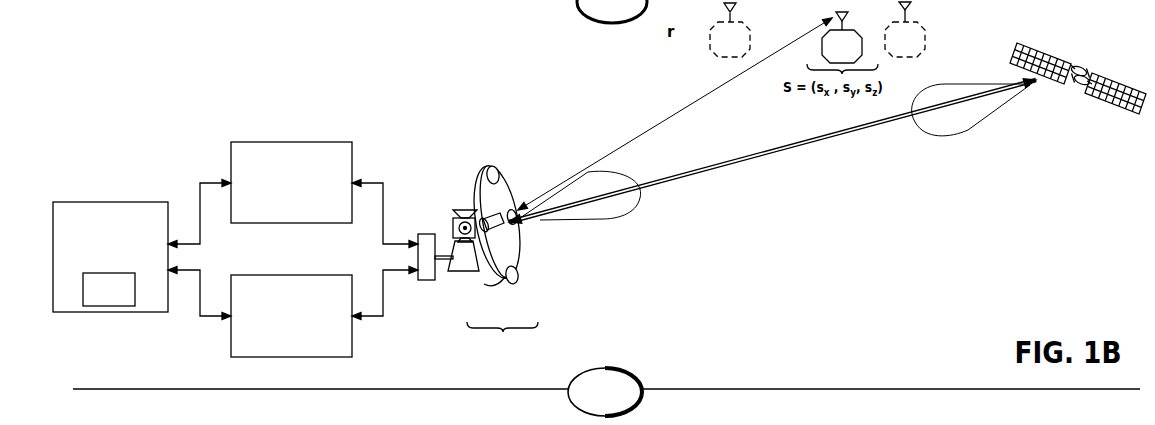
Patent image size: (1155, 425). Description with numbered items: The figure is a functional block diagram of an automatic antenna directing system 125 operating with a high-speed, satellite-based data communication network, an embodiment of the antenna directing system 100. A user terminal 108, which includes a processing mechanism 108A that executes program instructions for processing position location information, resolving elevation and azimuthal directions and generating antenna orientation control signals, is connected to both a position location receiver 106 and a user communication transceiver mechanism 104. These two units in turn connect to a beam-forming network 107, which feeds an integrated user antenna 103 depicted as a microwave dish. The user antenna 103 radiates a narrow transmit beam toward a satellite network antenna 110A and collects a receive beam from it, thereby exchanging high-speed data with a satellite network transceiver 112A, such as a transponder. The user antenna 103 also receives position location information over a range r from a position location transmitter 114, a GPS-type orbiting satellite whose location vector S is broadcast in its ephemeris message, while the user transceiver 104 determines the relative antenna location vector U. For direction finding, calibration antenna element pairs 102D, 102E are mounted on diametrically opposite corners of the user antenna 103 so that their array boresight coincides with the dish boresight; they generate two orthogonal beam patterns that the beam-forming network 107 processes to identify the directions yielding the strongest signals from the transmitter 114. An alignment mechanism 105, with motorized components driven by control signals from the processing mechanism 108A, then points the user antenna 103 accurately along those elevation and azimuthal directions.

The antenna directing system 100 is at (594, 5).
The calibration antenna element pair 102D is at (521, 223).
The calibration antenna element pair 102E is at (494, 166).
The integrated user antenna 103 is at (499, 231).
The user communication transceiver mechanism 104 is at (291, 316).
The alignment mechanism 105 is at (468, 212).
The position location receiver 106 is at (291, 182).
The beam-forming network 107 is at (432, 250).
The user terminal 108 is at (110, 257).
The processing mechanism 108A is at (109, 289).
The satellite network antenna 110A is at (1014, 62).
The satellite network transceiver 112A is at (1108, 79).
The position location transmitter 114 is at (854, 34).
The automatic antenna directing system 125 is at (619, 402).